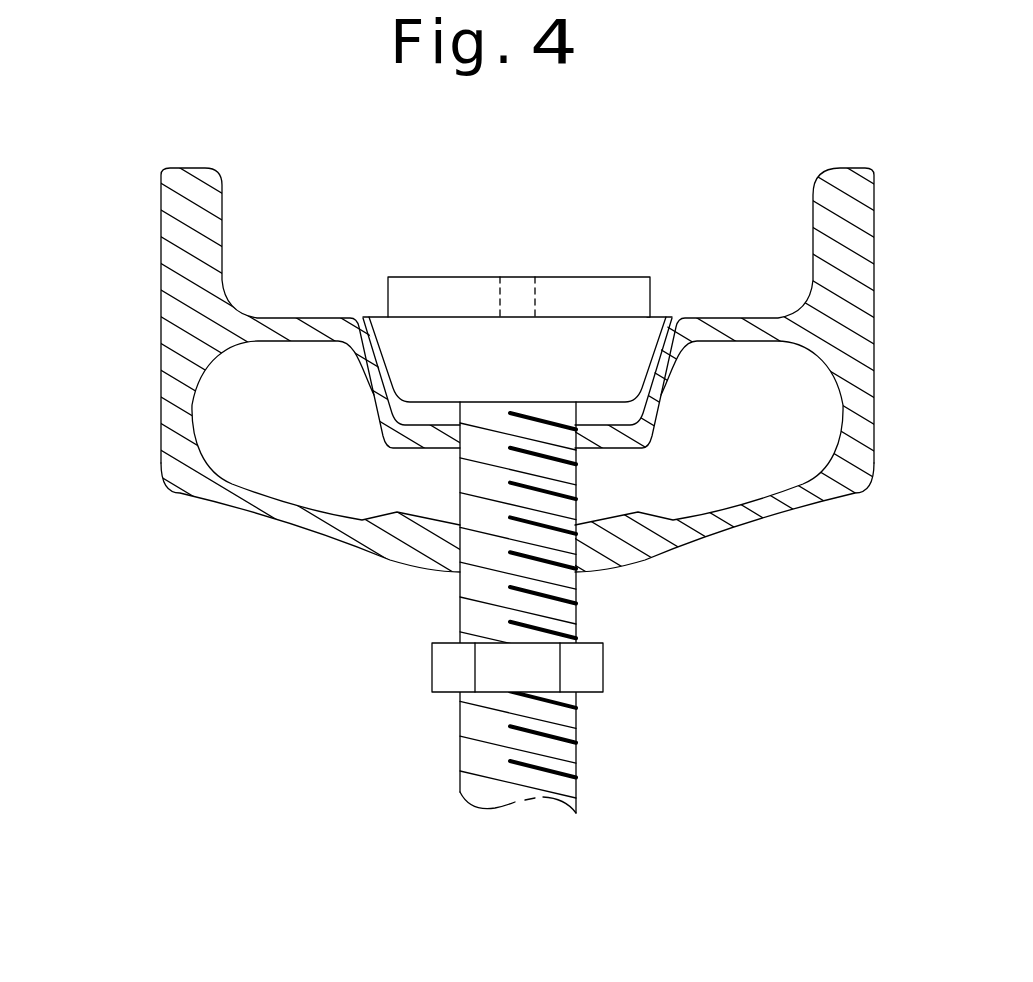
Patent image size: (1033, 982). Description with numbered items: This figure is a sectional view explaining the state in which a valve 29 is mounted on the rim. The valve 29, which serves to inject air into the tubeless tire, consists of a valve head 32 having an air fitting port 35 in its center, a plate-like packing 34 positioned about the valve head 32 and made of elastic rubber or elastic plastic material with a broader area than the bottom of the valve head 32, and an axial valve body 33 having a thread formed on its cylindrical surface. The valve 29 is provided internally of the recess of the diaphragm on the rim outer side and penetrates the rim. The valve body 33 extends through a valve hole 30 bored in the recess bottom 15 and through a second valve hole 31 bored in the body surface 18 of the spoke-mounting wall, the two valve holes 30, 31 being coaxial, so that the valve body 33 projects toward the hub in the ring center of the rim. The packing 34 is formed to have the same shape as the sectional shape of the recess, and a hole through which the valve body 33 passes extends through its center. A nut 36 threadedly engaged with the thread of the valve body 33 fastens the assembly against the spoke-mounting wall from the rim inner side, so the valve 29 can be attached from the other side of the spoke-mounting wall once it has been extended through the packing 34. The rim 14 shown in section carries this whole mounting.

The rim 14 is at (499, 491).
The recess bottom 15 is at (628, 440).
The body surface 18 is at (393, 567).
The valve 29 is at (511, 496).
The valve hole 30 is at (457, 436).
The valve hole 31 is at (457, 550).
The valve head 32 is at (465, 288).
The valve body 33 is at (540, 605).
The packing 34 is at (650, 333).
The air fitting port 35 is at (518, 288).
The nut 36 is at (587, 673).